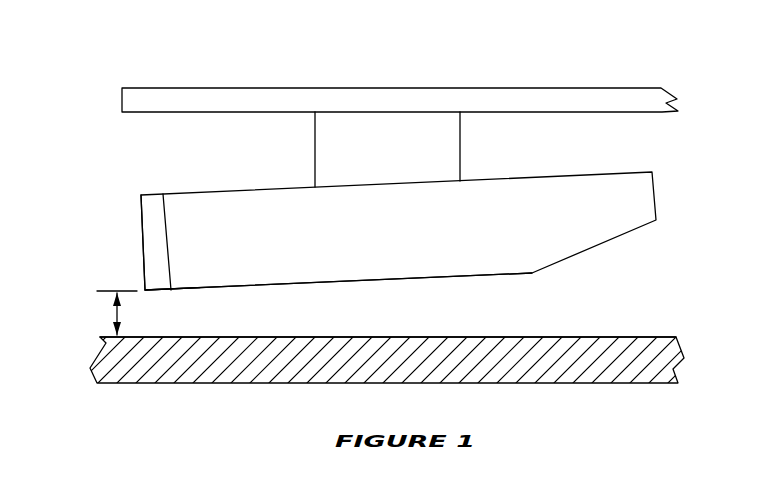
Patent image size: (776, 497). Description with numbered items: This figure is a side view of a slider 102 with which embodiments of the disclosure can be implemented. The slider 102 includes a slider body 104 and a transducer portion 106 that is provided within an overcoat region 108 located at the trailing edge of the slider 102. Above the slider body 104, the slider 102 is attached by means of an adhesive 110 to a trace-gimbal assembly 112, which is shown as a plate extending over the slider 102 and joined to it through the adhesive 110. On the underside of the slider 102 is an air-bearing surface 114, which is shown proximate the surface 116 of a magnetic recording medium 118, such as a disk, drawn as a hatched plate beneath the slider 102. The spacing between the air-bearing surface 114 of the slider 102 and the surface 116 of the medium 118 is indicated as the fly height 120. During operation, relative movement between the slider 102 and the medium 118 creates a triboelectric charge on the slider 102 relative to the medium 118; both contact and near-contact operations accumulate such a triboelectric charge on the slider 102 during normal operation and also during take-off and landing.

The slider 102 is at (680, 188).
The slider body 104 is at (567, 184).
The transducer portion 106 is at (165, 305).
The overcoat region 108 is at (147, 236).
The adhesive 110 is at (460, 147).
The trace-gimbal assembly 112 is at (608, 97).
The air-bearing surface 114 is at (417, 277).
The surface of magnetic recording medium 116 is at (569, 337).
The magnetic recording medium 118 is at (545, 383).
The fly height 120 is at (104, 313).